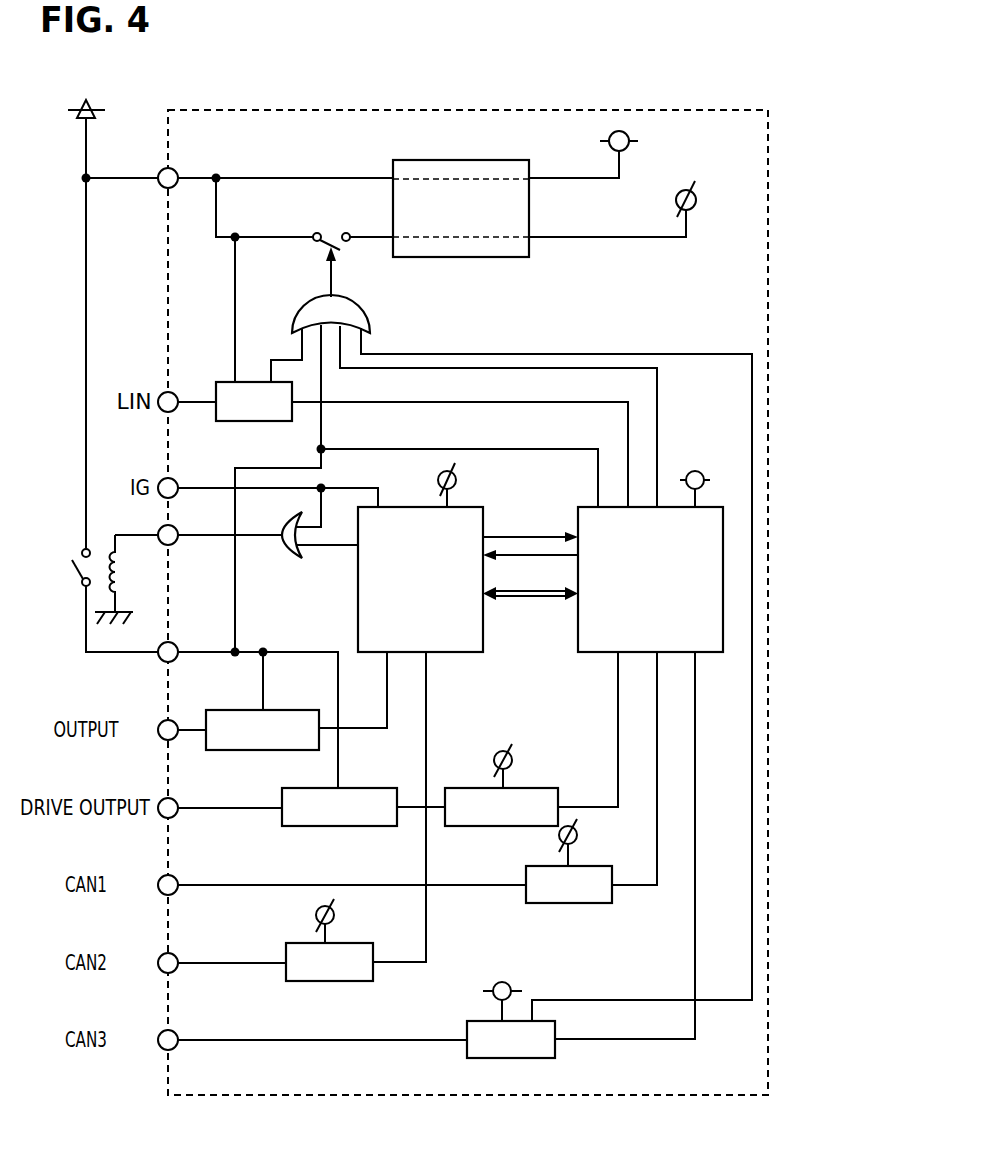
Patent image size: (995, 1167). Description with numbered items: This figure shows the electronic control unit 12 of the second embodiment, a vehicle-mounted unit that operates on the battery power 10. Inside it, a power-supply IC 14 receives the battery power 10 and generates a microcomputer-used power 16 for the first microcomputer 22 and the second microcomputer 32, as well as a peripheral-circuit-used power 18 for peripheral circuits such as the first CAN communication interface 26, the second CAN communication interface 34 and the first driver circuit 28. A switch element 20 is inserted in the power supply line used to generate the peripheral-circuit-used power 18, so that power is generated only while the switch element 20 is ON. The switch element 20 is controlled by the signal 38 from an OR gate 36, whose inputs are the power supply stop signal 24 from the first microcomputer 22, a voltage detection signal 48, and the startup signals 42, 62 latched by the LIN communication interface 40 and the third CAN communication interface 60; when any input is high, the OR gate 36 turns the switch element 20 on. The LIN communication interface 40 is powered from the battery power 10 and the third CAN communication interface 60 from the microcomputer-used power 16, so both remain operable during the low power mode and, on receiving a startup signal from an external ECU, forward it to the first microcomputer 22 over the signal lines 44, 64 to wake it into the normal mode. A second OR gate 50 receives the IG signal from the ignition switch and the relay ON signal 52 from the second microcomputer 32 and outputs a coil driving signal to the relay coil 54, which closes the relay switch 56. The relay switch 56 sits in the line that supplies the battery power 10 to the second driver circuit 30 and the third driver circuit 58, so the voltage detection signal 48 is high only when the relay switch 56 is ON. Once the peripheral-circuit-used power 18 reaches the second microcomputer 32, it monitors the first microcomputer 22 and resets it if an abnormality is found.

The battery power 10 is at (91, 104).
The electronic control unit 12 is at (222, 110).
The power-supply IC 14 is at (420, 160).
The microcomputer-used power 16 is at (629, 137).
The peripheral-circuit-used power 18 is at (697, 203).
The switch element 20 is at (322, 229).
The first microcomputer 22 is at (586, 655).
The power supply stop signal 24 is at (659, 408).
The first CAN communication interface 26 is at (596, 865).
The first driver circuit 28 is at (534, 787).
The second driver circuit 30 is at (377, 787).
The second microcomputer 32 is at (474, 506).
The second CAN communication interface 34 is at (357, 942).
The OR gate 36 is at (368, 312).
The signal outputted from the OR gate 38 is at (329, 279).
The LIN communication interface 40 is at (222, 382).
The startup signal 42 is at (273, 358).
The signal line 44 is at (422, 400).
The voltage detection signal 48 is at (323, 439).
The OR gate 50 is at (293, 560).
The relay ON signal 52 is at (331, 549).
The relay coil 54 is at (122, 585).
The relay switch 56 is at (77, 570).
The third driver circuit 58 is at (288, 710).
The third CAN communication interface 60 is at (480, 1021).
The startup signal 62 is at (614, 1000).
The signal line 64 is at (697, 866).